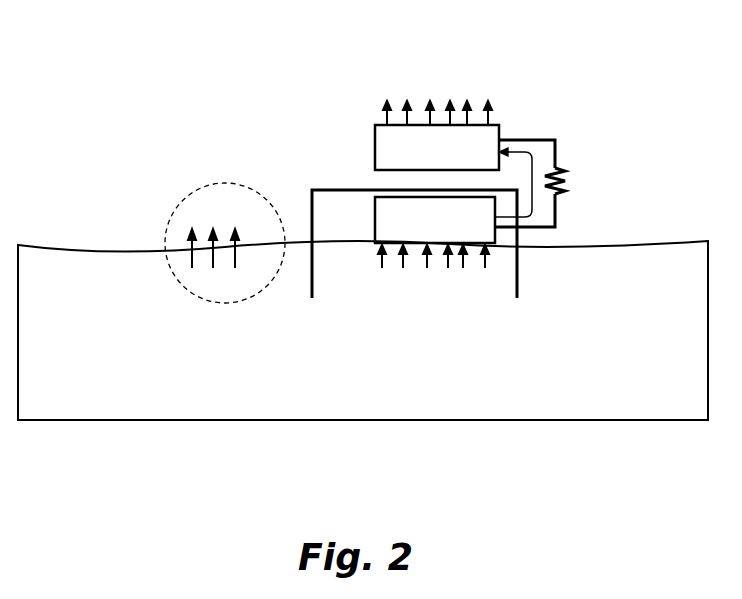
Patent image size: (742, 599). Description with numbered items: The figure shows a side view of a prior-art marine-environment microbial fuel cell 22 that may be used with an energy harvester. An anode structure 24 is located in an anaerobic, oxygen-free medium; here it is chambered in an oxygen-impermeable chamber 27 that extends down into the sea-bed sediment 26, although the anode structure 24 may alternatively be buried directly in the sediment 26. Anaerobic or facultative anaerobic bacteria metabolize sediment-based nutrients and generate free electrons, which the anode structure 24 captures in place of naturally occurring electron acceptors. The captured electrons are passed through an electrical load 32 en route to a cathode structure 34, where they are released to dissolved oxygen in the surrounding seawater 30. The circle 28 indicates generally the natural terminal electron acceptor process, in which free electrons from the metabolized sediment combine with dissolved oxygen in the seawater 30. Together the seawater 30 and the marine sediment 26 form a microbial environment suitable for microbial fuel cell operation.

The microbial fuel cell 22 is at (602, 99).
The anode structure 24 is at (375, 222).
The sea-bed sediment 26 is at (431, 373).
The oxygen-impermeable chamber 27 is at (517, 270).
The circle 28 is at (196, 196).
The seawater 30 is at (101, 97).
The electrical load 32 is at (566, 172).
The cathode structure 34 is at (375, 158).